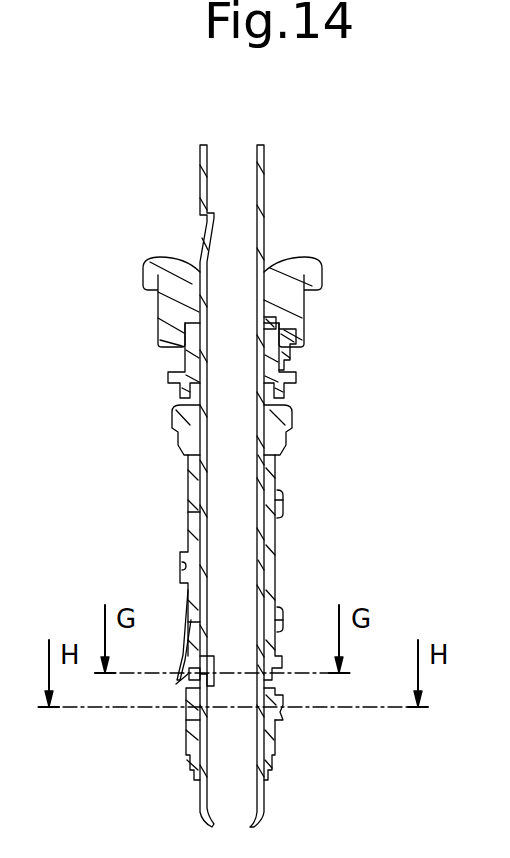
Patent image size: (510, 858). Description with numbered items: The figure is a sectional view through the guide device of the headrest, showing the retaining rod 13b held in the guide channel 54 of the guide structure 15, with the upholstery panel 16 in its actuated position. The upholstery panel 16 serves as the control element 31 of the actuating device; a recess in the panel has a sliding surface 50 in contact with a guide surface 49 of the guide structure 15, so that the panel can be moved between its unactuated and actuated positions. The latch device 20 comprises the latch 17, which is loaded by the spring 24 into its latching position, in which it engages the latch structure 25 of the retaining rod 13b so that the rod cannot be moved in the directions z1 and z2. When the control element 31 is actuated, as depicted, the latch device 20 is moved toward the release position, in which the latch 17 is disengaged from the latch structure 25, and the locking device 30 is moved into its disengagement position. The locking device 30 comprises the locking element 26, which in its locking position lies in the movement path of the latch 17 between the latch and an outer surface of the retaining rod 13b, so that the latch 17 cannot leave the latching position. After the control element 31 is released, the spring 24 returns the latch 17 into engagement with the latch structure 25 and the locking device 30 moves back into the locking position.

The retaining rod 13b is at (232, 178).
The latch structure 25 is at (196, 231).
The upholstery panel 16 is at (176, 268).
The control element 31 is at (327, 264).
The guide surface 49 is at (283, 322).
The sliding surface 50 is at (270, 335).
The guide structure 15 is at (278, 472).
The guide channel 54 is at (271, 551).
The spring 24 is at (190, 602).
The latch device 20 is at (174, 632).
The latch 17 is at (185, 690).
The locking element 26 is at (278, 720).
The locking device 30 is at (280, 722).